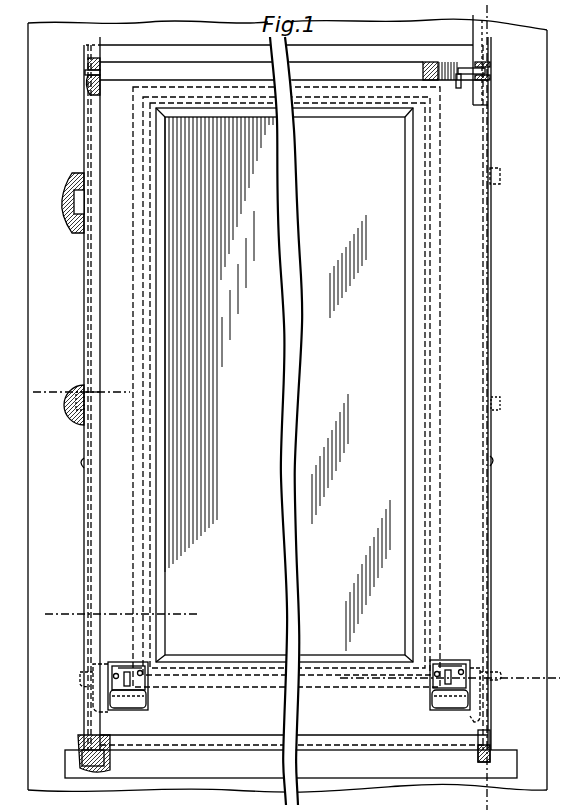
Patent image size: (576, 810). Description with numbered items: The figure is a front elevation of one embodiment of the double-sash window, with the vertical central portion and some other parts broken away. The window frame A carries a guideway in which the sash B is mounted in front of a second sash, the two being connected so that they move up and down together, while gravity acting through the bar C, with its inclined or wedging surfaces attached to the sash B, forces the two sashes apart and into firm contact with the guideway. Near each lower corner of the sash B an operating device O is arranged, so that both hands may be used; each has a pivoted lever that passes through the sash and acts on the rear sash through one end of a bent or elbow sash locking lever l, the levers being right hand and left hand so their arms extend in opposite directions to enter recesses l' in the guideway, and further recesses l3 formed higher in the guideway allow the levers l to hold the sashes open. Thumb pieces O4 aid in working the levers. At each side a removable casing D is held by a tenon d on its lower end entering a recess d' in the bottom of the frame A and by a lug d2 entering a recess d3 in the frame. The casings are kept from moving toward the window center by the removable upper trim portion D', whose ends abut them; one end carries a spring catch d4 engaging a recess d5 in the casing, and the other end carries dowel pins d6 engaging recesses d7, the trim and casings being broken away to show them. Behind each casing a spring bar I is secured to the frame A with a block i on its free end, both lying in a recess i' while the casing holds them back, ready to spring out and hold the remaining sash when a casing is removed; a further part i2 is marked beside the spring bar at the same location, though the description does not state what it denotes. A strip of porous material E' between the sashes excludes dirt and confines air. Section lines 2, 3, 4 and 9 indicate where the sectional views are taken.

The window frame A is at (287, 405).
The sash B is at (294, 416).
The bar C is at (95, 464).
The casing D is at (296, 382).
The upper portion of the trim D' is at (294, 63).
The strip of material E' is at (260, 385).
The spring bar I is at (86, 404).
The block i is at (286, 411).
The recess i' is at (275, 393).
The knob pin i2 is at (90, 398).
The tenon d is at (284, 751).
The recess d' is at (285, 752).
The lug d2 is at (70, 190).
The recess d3 is at (70, 226).
The spring catch d4 is at (457, 88).
The recess d5 is at (490, 70).
The dowel pin d6 is at (86, 72).
The recess d7 is at (86, 86).
The sash locking lever l is at (286, 693).
The recess l' is at (291, 673).
The recess l3 is at (80, 464).
The operating device O is at (450, 706).
The thumb piece O4 is at (145, 668).
The section line 2— 2 is at (502, 806).
The section line 3— 3 is at (124, 615).
The section line 4— 4 is at (451, 685).
The section line 9— 9 is at (80, 393).